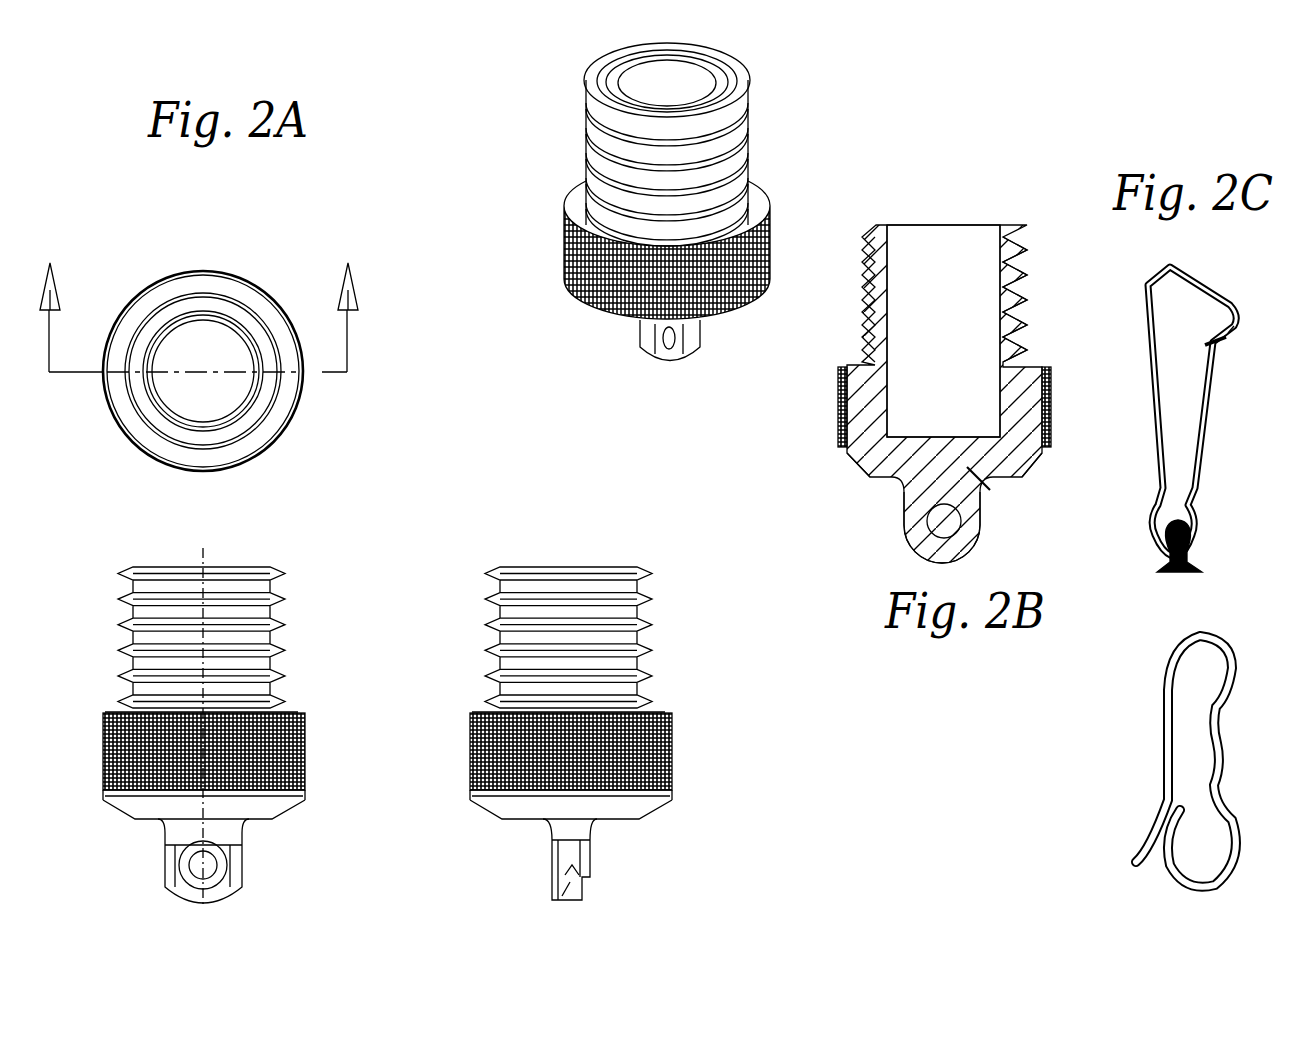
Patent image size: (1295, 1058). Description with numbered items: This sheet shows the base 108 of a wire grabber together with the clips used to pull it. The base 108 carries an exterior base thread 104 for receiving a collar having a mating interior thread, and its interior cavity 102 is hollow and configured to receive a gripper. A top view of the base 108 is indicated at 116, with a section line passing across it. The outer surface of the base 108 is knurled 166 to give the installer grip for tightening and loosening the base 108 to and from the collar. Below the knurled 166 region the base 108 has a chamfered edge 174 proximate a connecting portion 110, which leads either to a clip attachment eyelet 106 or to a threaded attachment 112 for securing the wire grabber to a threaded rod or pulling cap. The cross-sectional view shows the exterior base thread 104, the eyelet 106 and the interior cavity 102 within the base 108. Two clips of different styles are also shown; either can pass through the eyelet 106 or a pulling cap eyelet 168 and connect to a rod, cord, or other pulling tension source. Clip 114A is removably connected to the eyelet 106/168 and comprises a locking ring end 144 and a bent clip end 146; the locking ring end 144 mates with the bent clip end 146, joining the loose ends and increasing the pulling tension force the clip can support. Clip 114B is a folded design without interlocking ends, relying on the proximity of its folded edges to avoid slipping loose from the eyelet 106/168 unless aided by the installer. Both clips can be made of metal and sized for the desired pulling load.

In FIG. 2A, the interior cavity 102 is at (708, 88).
In FIG. 2B, the interior cavity 102 is at (945, 245).
In FIG. 2A, the exterior base thread 104 is at (274, 583).
In FIG. 2B, the exterior base thread 104 is at (872, 314).
In FIG. 2A, the eyelet 106 is at (217, 862).
In FIG. 2B, the eyelet 106 is at (937, 534).
In FIG. 2C, the eyelet 106 is at (1111, 546).
In FIG. 2A, the base 108 is at (178, 262).
In FIG. 2B, the base 108 is at (969, 194).
In FIG. 2A, the connecting portion 110 is at (555, 865).
In FIG. 2A, the threaded attachment 112 is at (565, 893).
In FIG. 2C, the clip 114A is at (1143, 282).
In FIG. 2C, the clip 114B is at (1150, 708).
In FIG. 2A, the top view of the base 116 is at (353, 299).
In FIG. 2C, the locking ring end 144 is at (1218, 347).
In FIG. 2C, the bent clip end 146 is at (1235, 323).
In FIG. 2A, the knurled 166 is at (305, 733).
In FIG. 2B, the knurled 166 is at (840, 431).
In FIG. 2C, the pulling cap eyelet 168 is at (1165, 558).
In FIG. 2A, the chamfered edge 174 is at (122, 813).
In FIG. 2B, the chamfered edge 174 is at (868, 472).